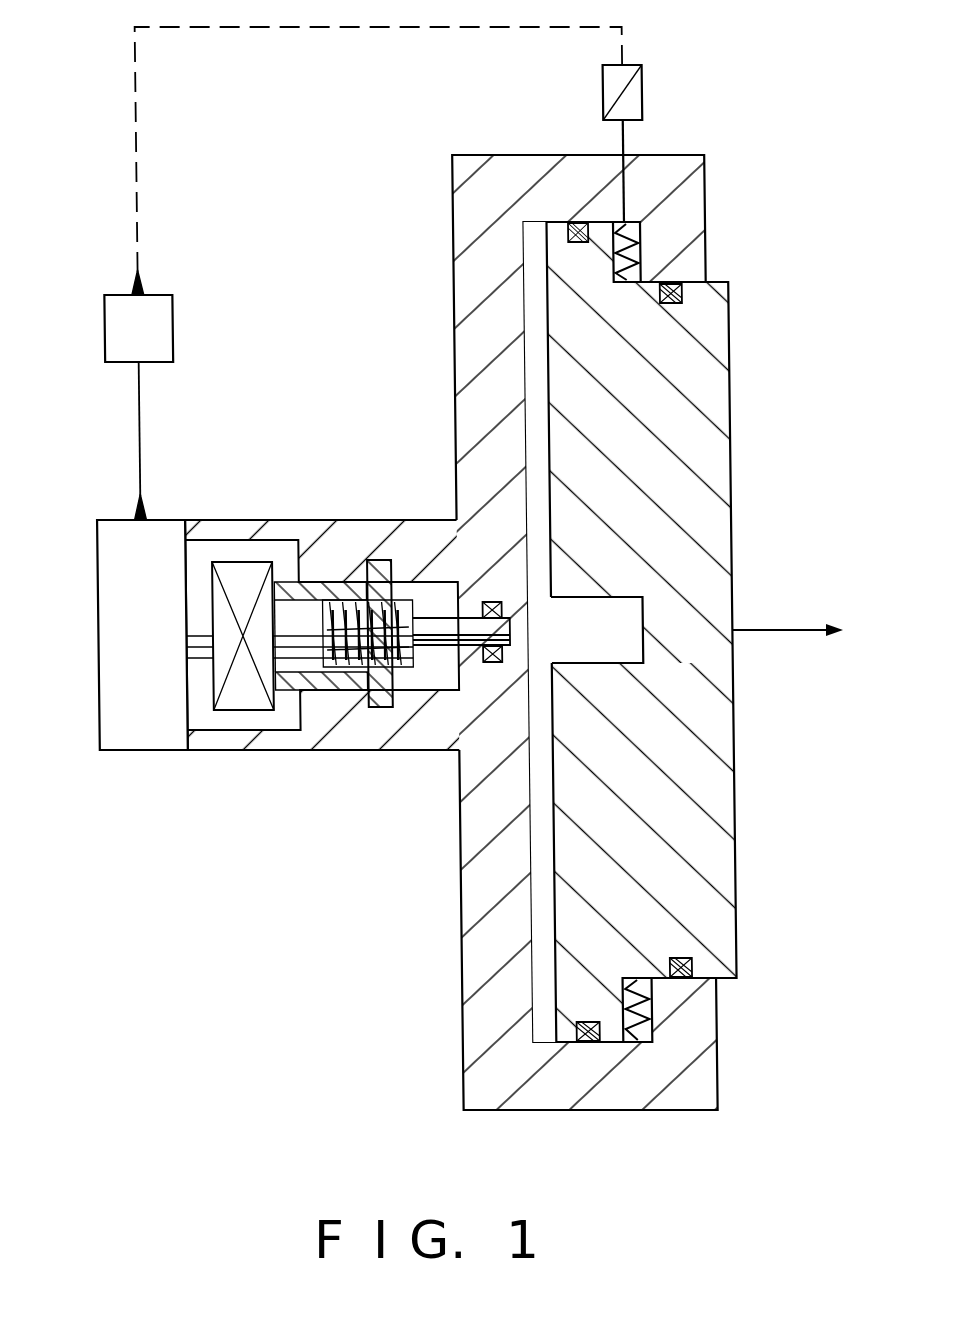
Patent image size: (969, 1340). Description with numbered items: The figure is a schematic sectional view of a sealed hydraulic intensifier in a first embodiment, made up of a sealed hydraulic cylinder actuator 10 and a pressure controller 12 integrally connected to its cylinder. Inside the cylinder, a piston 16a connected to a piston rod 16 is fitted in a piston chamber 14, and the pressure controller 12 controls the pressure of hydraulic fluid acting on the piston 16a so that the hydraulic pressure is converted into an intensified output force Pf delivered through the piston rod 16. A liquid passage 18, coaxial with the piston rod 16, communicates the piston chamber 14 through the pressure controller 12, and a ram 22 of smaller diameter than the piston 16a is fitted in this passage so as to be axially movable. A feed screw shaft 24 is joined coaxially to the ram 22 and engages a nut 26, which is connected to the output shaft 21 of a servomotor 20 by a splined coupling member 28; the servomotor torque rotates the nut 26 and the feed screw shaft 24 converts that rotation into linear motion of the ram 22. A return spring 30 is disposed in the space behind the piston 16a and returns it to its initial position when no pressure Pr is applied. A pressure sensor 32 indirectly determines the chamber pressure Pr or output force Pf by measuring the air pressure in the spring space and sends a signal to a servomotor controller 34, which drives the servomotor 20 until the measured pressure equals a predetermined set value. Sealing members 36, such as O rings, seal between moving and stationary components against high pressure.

The sealed hydraulic cylinder actuator 10 is at (750, 112).
The pressure controller 12 is at (132, 762).
The piston chamber 14 is at (540, 966).
The piston rod 16 is at (718, 802).
The piston 16a is at (557, 238).
The liquid passage 18 is at (523, 622).
The servomotor 20 is at (80, 528).
The output shaft 21 is at (185, 632).
The ram 22 is at (428, 640).
The feed screw shaft 24 is at (338, 600).
The nut 26 is at (288, 585).
The coupling member 28 is at (234, 570).
The return spring 30 is at (641, 228).
The pressure sensor 32 is at (640, 82).
The servomotor controller 34 is at (122, 327).
The sealing members 36 is at (490, 664).